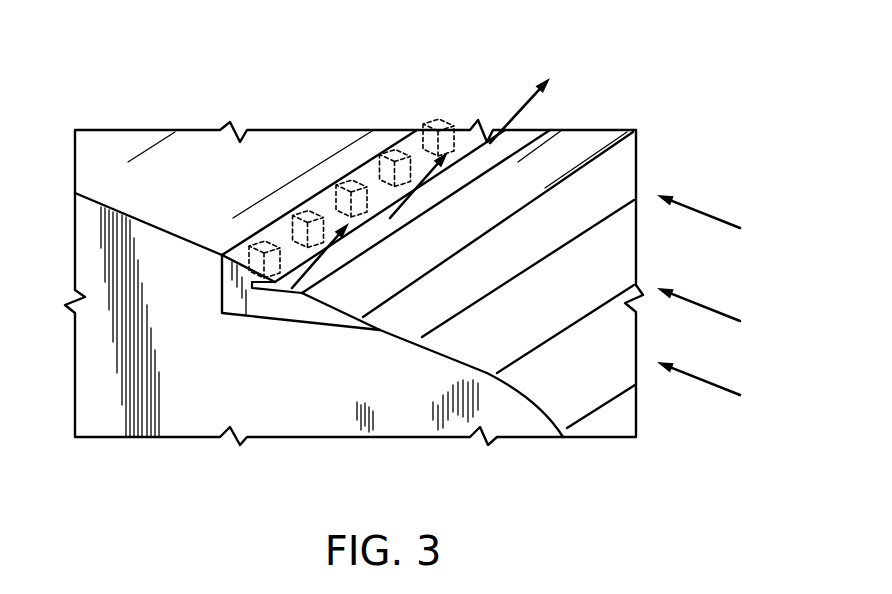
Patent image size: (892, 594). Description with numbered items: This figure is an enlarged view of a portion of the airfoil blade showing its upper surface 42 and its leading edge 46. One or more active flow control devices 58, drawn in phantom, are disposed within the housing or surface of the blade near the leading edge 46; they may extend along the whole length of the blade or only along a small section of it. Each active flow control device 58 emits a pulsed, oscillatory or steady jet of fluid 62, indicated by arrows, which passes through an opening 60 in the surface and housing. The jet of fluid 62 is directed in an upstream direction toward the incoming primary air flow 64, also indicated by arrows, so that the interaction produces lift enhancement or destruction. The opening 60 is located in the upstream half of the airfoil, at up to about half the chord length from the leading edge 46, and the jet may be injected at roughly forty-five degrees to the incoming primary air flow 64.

The upper surface 42 is at (193, 152).
The leading edge 46 is at (615, 432).
The active flow control devices 58 is at (393, 145).
The opening 60 is at (267, 305).
The jet of fluid 62 is at (537, 100).
The incoming primary air flow 64 is at (723, 215).